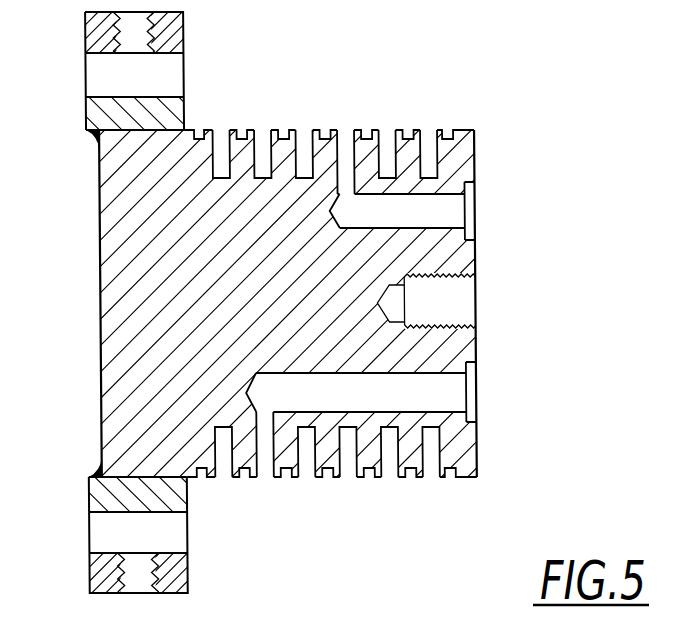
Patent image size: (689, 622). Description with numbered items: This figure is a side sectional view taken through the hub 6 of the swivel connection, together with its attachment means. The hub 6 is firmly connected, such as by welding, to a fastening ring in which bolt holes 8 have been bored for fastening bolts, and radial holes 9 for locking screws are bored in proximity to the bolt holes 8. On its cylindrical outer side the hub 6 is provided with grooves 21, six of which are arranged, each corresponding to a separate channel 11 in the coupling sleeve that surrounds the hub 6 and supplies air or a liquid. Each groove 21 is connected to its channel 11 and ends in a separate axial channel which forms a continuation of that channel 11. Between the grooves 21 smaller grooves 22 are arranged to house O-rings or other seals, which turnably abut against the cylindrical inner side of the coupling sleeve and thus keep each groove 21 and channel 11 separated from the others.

The hub 6 is at (148, 252).
The bolt holes 8 is at (110, 75).
The radial holes 9 is at (127, 40).
The channel 11 is at (442, 213).
The grooves 21 is at (342, 140).
The smaller grooves 22 is at (279, 140).